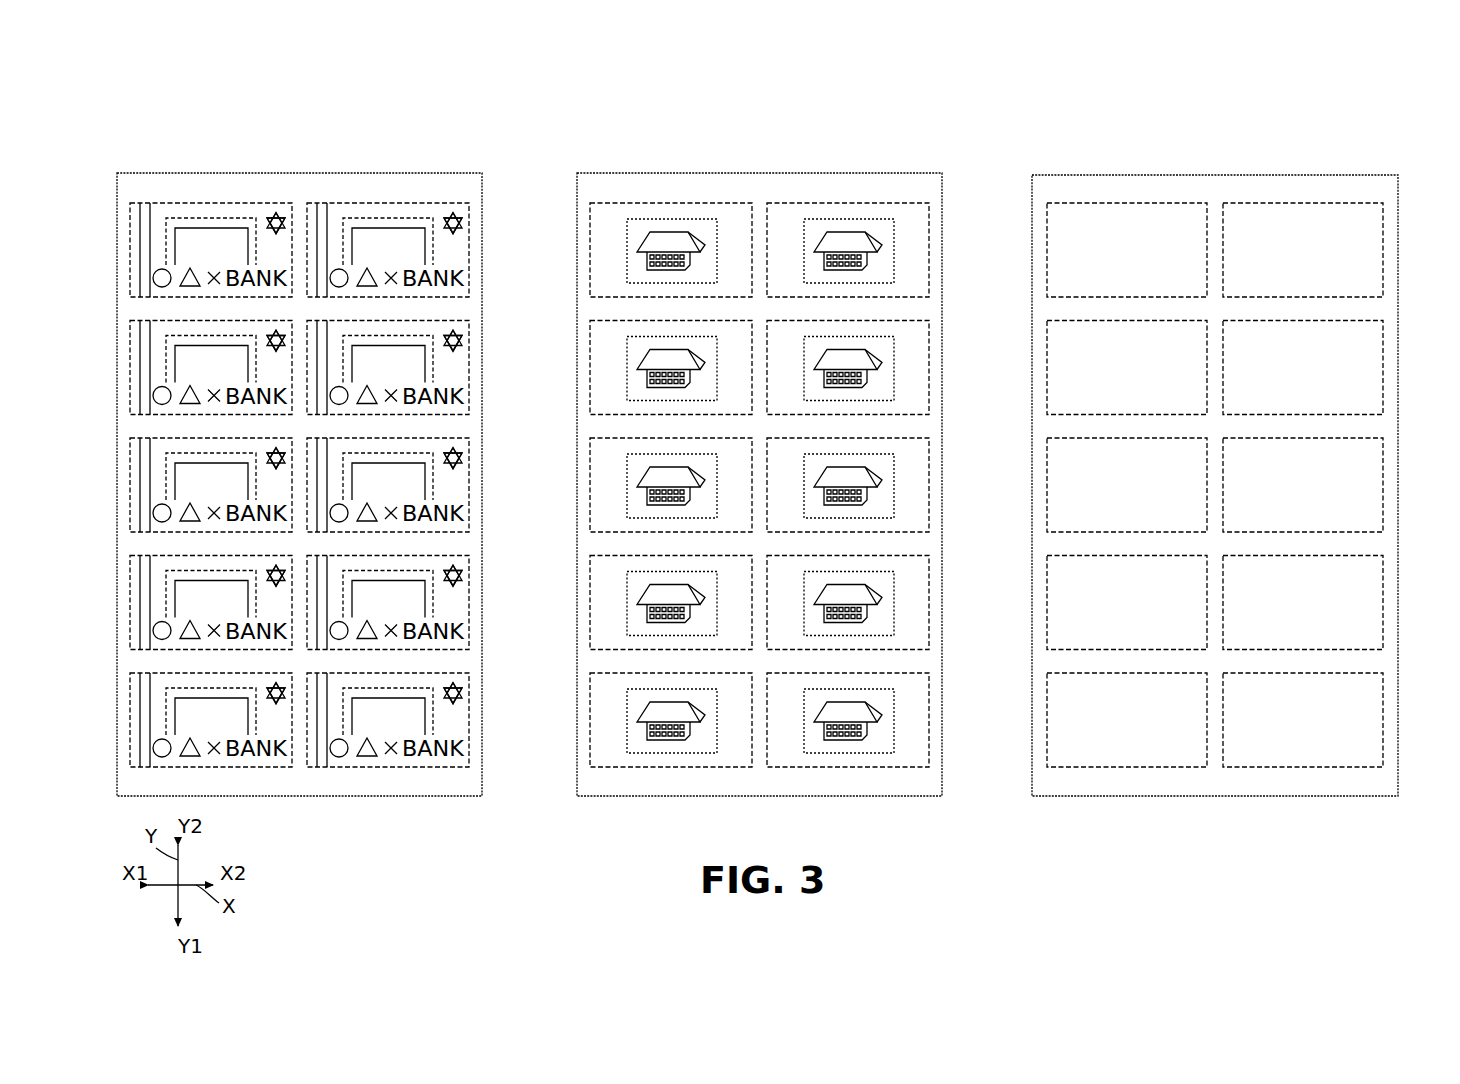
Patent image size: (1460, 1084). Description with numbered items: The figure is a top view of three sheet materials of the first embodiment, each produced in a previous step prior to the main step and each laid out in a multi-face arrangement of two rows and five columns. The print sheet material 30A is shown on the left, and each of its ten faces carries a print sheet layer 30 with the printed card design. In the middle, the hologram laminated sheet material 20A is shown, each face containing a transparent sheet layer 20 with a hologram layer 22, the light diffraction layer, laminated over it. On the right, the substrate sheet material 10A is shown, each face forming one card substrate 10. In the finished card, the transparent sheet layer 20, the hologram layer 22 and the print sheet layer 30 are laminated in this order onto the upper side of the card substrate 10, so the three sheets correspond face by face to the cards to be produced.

The print sheet material 30A is at (270, 157).
The print sheet layer 30 is at (398, 137).
The hologram laminated sheet material 20A is at (662, 167).
The hologram layer 22 is at (815, 222).
The transparent sheet layer 20 is at (866, 208).
The substrate sheet material 10A is at (1240, 160).
The card substrate 10 is at (1325, 215).